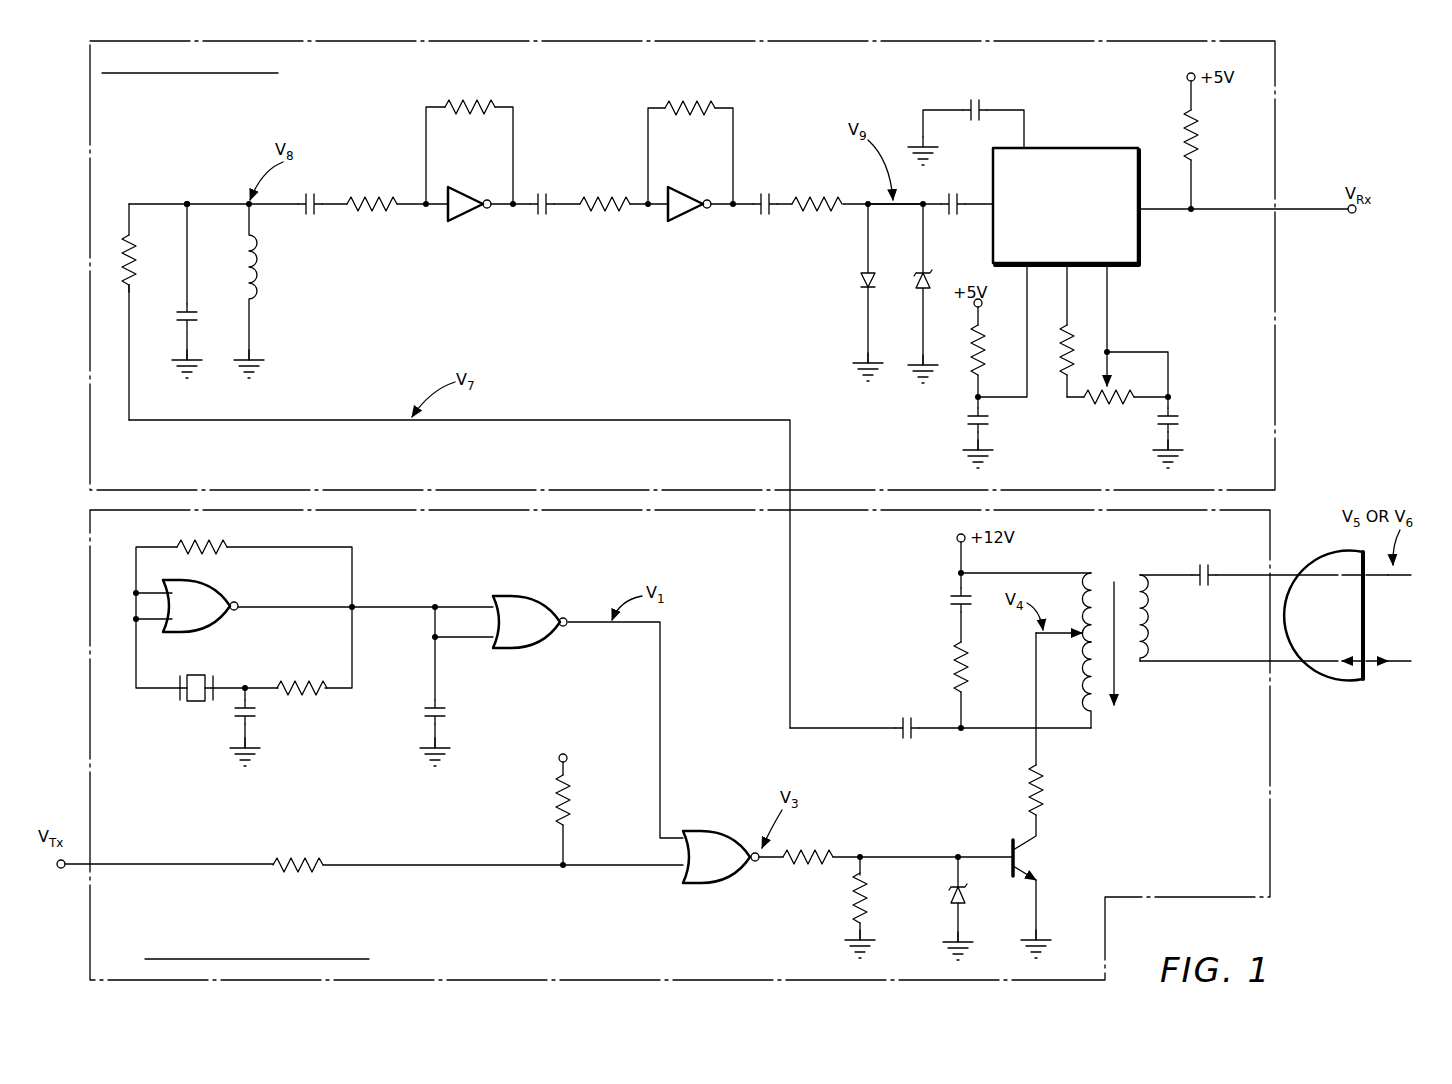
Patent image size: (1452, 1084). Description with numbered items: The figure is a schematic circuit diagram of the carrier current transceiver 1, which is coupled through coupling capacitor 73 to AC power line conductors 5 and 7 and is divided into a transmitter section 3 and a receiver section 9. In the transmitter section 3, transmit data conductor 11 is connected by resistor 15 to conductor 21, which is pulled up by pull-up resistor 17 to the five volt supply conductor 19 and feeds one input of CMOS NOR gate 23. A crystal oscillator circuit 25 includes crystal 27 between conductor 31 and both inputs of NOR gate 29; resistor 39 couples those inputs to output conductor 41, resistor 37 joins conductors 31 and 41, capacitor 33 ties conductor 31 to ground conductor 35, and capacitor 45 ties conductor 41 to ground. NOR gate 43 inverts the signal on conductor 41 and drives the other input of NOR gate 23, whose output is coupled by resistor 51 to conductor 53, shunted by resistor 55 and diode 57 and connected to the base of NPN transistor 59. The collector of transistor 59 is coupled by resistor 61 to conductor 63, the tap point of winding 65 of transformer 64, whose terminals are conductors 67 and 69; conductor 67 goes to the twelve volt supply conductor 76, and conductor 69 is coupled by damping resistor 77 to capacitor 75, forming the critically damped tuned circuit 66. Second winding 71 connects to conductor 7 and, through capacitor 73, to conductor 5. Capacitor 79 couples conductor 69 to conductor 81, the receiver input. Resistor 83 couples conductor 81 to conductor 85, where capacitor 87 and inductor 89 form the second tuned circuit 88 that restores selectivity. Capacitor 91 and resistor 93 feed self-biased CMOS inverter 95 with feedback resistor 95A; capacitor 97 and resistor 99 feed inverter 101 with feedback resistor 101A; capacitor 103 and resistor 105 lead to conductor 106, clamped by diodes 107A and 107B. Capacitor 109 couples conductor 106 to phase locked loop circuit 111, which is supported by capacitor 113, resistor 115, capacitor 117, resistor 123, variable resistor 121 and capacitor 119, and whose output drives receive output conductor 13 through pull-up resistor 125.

The carrier current transceiver 1 is at (1300, 800).
The transmitter section 3 is at (1275, 750).
The AC power line conductor 5 is at (1290, 575).
The AC power line conductor 7 is at (1340, 678).
The receiver section 9 is at (1277, 118).
The transmit data conductor 11 is at (64, 870).
The receive output conductor 13 is at (1350, 218).
The resistor 15 is at (298, 860).
The pull-up resistor 17 is at (575, 815).
The +5 volt supply conductor 19 is at (556, 762).
The conductor 21 is at (588, 863).
The two input CMOS NOR gate 23 is at (706, 830).
The crystal oscillator circuit 25 is at (162, 700).
The crystal 27 is at (195, 675).
The two input CMOS NOR gate 29 is at (216, 598).
The conductor 31 is at (247, 685).
The capacitor 33 is at (235, 720).
The ground conductor 35 is at (178, 360).
The resistor 37 is at (302, 685).
The resistor 39 is at (218, 545).
The conductor 41 is at (383, 605).
The CMOS NOR gate 43 is at (525, 600).
The capacitor 45 is at (425, 720).
The resistor 51 is at (812, 848).
The conductor 53 is at (958, 856).
The resistor 55 is at (852, 900).
The diode 57 is at (970, 900).
The NPN transistor 59 is at (1010, 852).
The resistor 61 is at (1043, 808).
The conductor 63 is at (1058, 632).
The transformer 64 is at (1122, 668).
The winding 65 is at (1086, 656).
The tuned circuit 66 is at (927, 607).
The conductor 67 is at (1038, 572).
The conductor 69 is at (1060, 735).
The second winding 71 is at (1145, 633).
The coupling capacitor 73 is at (1210, 585).
The capacitor 75 is at (950, 610).
The +12 volt supply conductor 76 is at (955, 539).
The damping resistor 77 is at (953, 662).
The capacitor 79 is at (905, 740).
The conductor 81 is at (668, 420).
The resistor 83 is at (134, 257).
The conductor 85 is at (187, 201).
The capacitor 87 is at (196, 310).
The tuned circuit 88 is at (217, 380).
The inductor 89 is at (260, 262).
The capacitor 91 is at (316, 196).
The resistor 93 is at (383, 196).
The self-biased CMOS inverter 95 is at (462, 188).
The feedback resistor 95A is at (470, 100).
The capacitor 97 is at (556, 193).
The resistor 99 is at (598, 195).
The self-biased CMOS inverter 101 is at (687, 188).
The feedback resistor 101A is at (688, 100).
The capacitor 103 is at (770, 193).
The resistor 105 is at (822, 195).
The conductor 106 is at (898, 208).
The diode 107A is at (862, 290).
The diode 107B is at (918, 290).
The capacitor 109 is at (965, 180).
The phase locked loop circuit 111 is at (1072, 146).
The capacitor 113 is at (962, 105).
The resistor 115 is at (983, 365).
The capacitor 117 is at (968, 420).
The capacitor 119 is at (1175, 414).
The variable resistor 121 is at (1105, 405).
The resistor 123 is at (1062, 365).
The pull-up resistor 125 is at (1197, 140).